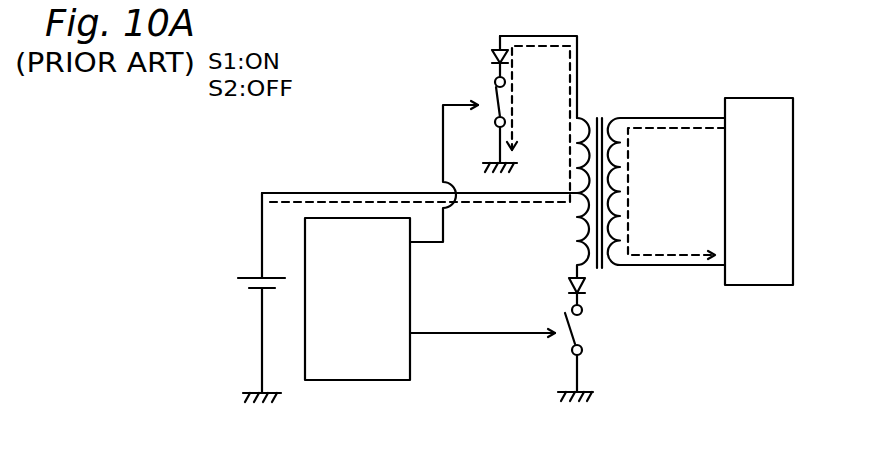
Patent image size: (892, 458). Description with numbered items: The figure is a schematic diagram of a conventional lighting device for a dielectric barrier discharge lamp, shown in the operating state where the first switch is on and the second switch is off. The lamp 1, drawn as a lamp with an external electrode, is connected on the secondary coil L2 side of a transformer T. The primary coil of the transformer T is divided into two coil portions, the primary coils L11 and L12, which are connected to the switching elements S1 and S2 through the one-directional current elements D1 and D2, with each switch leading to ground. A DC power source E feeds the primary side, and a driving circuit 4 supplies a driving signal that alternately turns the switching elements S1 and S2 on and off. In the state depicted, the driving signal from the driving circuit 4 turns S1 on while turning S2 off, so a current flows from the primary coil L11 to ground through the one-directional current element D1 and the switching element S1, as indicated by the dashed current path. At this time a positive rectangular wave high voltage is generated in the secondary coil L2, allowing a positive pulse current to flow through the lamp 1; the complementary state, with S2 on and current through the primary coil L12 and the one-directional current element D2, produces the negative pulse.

The dielectric barrier discharge lamp 1 is at (762, 285).
The driving circuit 4 is at (368, 380).
The DC power source (battery) E is at (246, 286).
The transformer T is at (605, 113).
The primary coil L11 is at (562, 155).
The primary coil L12 is at (562, 235).
The secondary coil L2 is at (666, 191).
The one-directional current element D1 is at (482, 56).
The one-directional current element D2 is at (560, 291).
The switching element S1 is at (513, 124).
The switching element S2 is at (592, 353).